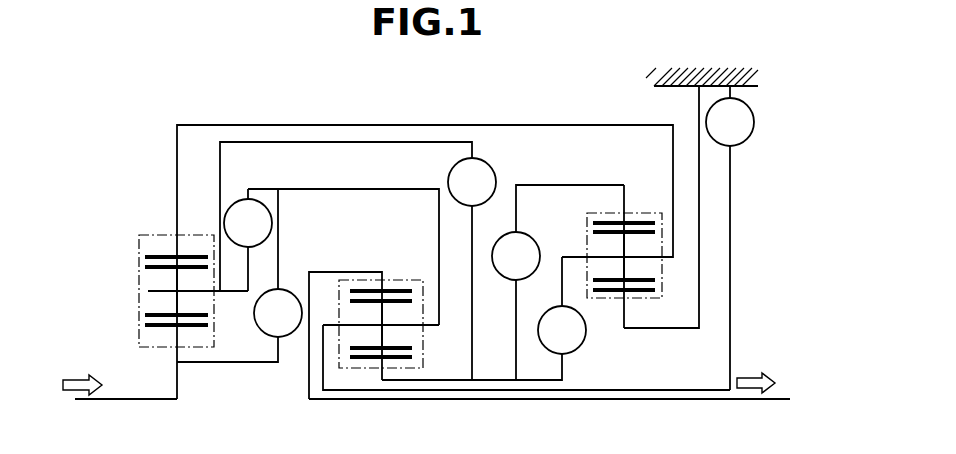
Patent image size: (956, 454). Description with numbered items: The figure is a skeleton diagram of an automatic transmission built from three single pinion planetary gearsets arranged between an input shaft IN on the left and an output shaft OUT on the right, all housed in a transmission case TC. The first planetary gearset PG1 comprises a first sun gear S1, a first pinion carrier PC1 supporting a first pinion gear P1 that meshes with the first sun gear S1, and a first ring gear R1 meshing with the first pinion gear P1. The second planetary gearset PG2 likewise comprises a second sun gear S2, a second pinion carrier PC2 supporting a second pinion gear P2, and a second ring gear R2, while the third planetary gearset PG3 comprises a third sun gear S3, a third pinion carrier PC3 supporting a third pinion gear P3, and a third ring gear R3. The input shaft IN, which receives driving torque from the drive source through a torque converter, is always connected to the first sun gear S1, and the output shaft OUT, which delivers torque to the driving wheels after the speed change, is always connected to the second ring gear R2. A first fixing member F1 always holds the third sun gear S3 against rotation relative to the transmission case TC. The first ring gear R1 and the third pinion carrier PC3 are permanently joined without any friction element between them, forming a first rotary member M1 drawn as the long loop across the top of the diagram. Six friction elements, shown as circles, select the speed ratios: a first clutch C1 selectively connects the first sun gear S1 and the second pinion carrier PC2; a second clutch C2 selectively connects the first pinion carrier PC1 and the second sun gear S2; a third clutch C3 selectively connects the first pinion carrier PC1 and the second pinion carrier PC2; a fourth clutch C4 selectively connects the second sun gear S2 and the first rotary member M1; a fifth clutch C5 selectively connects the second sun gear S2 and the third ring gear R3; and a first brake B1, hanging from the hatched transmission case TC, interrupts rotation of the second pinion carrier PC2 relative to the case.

The first rotary member M1 is at (383, 125).
The input shaft IN is at (115, 397).
The output shaft OUT is at (783, 397).
The transmission case TC is at (663, 86).
The first planetary gearset PG1 is at (153, 235).
The first ring gear R1 is at (195, 255).
The first pinion gear P1 is at (165, 271).
The first sun gear S1 is at (165, 328).
The first pinion carrier PC1 is at (237, 293).
The second planetary gearset PG2 is at (389, 271).
The second ring gear R2 is at (400, 288).
The second pinion gear P2 is at (370, 303).
The second sun gear S2 is at (371, 361).
The second pinion carrier PC2 is at (405, 327).
The third planetary gearset PG3 is at (639, 211).
The third ring gear R3 is at (652, 219).
The third pinion gear P3 is at (602, 240).
The third sun gear S3 is at (629, 292).
The third pinion carrier PC3 is at (569, 254).
The first clutch C1 is at (308, 275).
The second clutch C2 is at (358, 261).
The third clutch C3 is at (248, 240).
The fourth clutch C4 is at (484, 318).
The fifth clutch C5 is at (558, 282).
The first brake B1 is at (730, 238).
The first fixing member F1 is at (665, 330).